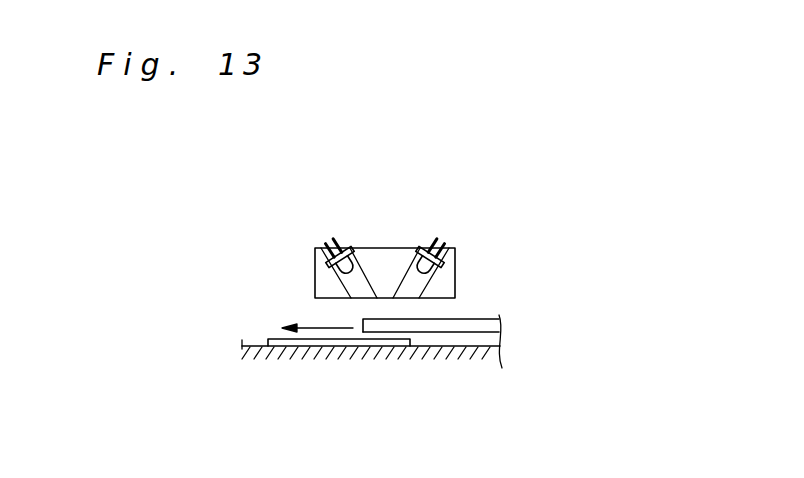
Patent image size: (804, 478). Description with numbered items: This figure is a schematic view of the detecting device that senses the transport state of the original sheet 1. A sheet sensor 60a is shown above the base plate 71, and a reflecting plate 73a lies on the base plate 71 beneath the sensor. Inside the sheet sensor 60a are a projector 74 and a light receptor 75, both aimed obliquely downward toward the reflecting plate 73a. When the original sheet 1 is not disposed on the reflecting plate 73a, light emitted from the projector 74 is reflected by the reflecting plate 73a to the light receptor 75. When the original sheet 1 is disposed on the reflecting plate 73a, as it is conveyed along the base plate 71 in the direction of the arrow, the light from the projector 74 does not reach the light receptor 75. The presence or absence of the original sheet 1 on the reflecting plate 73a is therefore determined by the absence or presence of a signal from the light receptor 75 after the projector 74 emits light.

The original sheet 1 is at (472, 326).
The sheet sensor 60a is at (456, 263).
The base plate 71 is at (450, 350).
The reflecting plate 73a is at (313, 346).
The projector 74 is at (342, 232).
The light receptor 75 is at (437, 232).